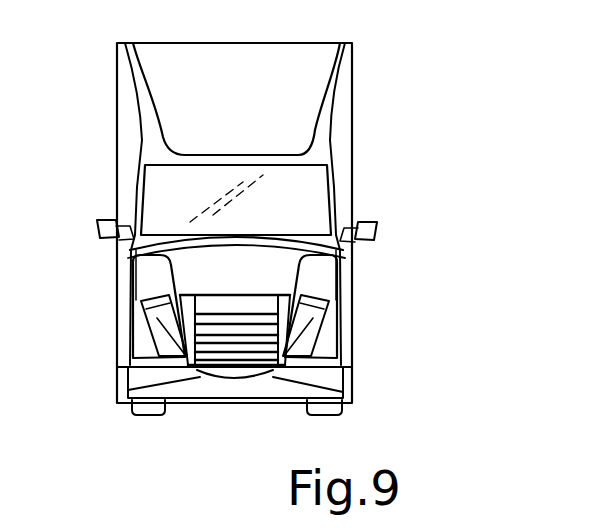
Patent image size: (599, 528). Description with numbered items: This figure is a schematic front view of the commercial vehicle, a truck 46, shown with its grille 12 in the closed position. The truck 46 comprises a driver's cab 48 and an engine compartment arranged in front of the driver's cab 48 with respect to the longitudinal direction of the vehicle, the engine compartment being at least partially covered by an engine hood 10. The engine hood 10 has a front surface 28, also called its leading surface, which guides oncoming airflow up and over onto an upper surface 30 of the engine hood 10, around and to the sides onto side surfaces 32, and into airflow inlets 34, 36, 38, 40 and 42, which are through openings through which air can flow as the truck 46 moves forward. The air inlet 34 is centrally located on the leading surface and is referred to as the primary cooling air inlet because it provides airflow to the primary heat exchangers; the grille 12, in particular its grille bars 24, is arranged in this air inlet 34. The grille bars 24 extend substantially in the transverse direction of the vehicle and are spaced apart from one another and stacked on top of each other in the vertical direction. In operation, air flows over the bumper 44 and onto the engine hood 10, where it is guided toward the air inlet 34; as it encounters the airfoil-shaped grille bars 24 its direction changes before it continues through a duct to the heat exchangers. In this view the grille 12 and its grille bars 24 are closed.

The engine hood 10 is at (338, 271).
The grille 12 is at (265, 296).
The grille bars 24 is at (213, 305).
The front surface 28 is at (119, 361).
The upper surface 30 is at (236, 260).
The side surfaces 32 is at (127, 303).
The air inlet 34 is at (226, 369).
The airflow inlet 36 is at (165, 364).
The airflow inlet 38 is at (312, 341).
The airflow inlet 40 is at (149, 309).
The airflow inlet 42 is at (325, 311).
The bumper 44 is at (200, 391).
The truck 46 is at (350, 85).
The driver's cab 48 is at (336, 190).